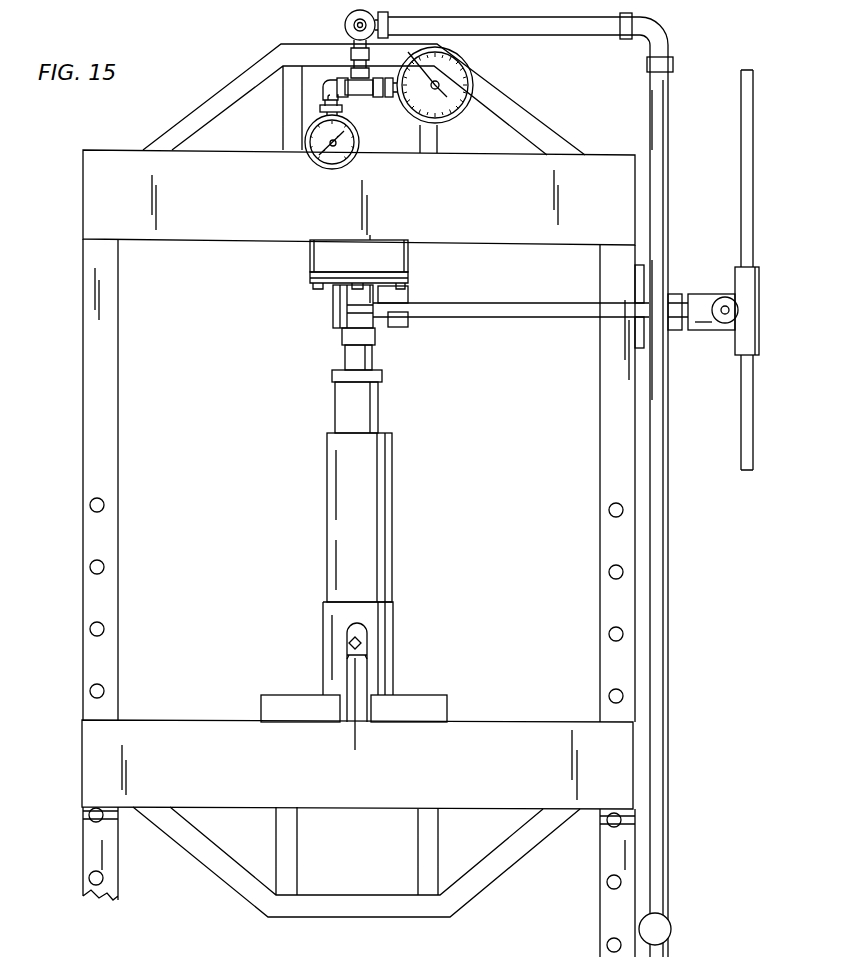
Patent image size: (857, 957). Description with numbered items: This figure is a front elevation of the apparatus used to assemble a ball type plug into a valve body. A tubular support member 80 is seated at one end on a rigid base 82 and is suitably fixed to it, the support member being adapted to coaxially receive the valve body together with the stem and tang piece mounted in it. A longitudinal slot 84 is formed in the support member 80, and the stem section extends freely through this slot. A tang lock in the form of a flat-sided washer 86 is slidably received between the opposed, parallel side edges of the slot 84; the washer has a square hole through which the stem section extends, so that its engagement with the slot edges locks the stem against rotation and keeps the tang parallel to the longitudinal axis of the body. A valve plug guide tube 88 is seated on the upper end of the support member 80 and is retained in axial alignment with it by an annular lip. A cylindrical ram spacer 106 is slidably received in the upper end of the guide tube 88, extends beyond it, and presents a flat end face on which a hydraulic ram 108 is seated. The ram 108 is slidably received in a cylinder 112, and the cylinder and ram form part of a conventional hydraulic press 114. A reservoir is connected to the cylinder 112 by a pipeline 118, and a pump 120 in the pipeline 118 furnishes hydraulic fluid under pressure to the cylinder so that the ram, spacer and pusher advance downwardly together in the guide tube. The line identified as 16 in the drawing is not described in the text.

The pressure line 16 is at (333, 311).
The tubular support member 80 is at (393, 673).
The rigid base 82 is at (492, 722).
The longitudinal slot 84 is at (352, 684).
The flat-sided washer 86 is at (347, 655).
The valve plug guide tube 88 is at (392, 503).
The cylindrical ram spacer 106 is at (378, 411).
The hydraulic ram 108 is at (372, 361).
The cylinder 112 is at (333, 322).
The hydraulic press 114 is at (300, 263).
The pipeline 118 is at (668, 548).
The pump 120 is at (672, 929).